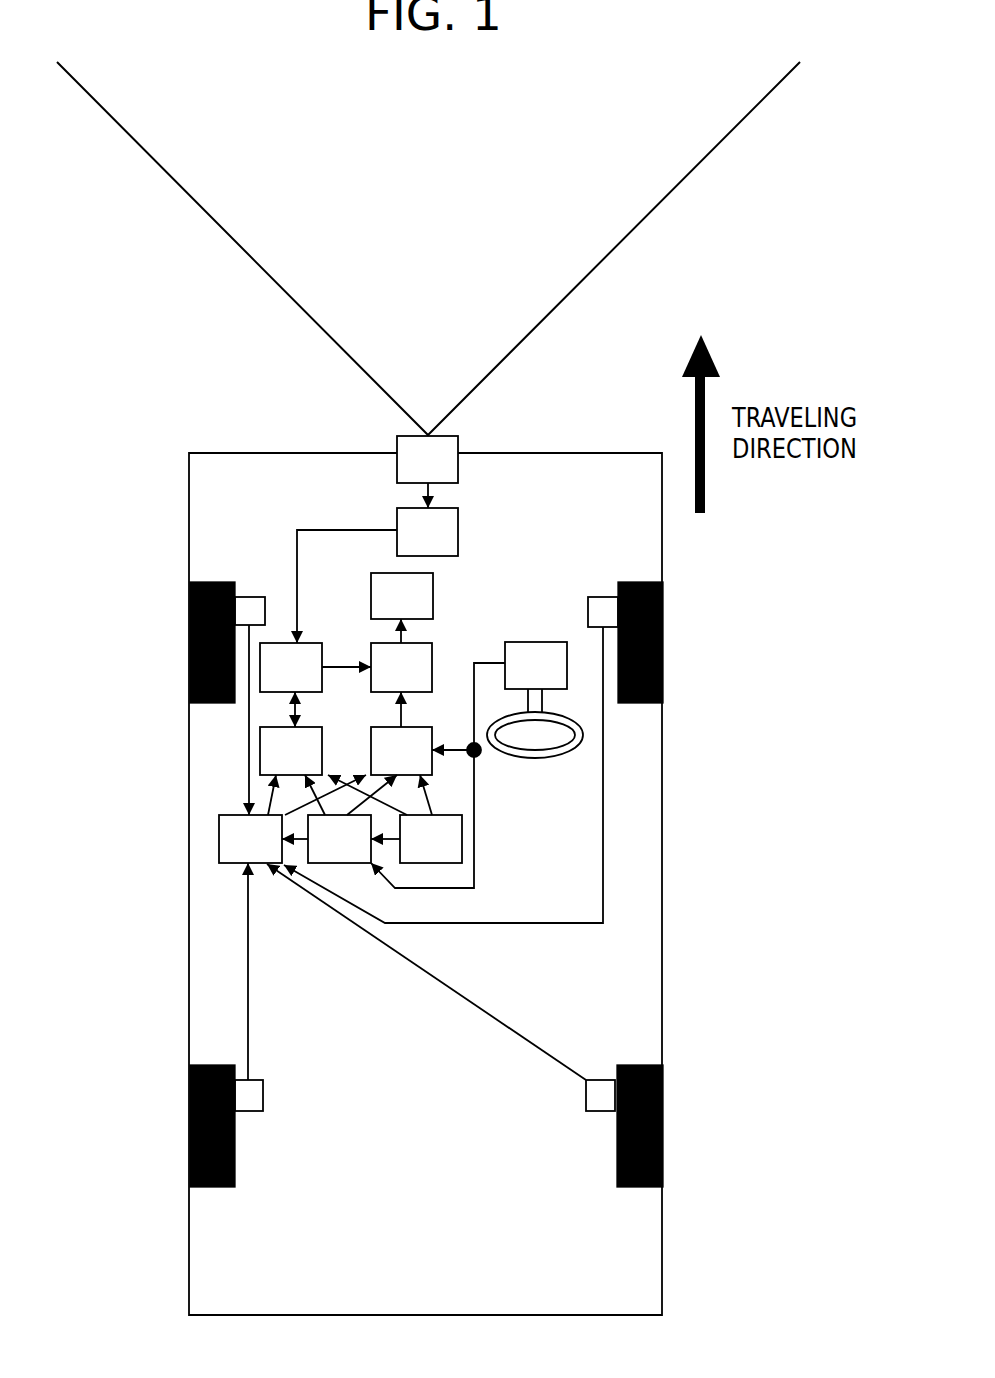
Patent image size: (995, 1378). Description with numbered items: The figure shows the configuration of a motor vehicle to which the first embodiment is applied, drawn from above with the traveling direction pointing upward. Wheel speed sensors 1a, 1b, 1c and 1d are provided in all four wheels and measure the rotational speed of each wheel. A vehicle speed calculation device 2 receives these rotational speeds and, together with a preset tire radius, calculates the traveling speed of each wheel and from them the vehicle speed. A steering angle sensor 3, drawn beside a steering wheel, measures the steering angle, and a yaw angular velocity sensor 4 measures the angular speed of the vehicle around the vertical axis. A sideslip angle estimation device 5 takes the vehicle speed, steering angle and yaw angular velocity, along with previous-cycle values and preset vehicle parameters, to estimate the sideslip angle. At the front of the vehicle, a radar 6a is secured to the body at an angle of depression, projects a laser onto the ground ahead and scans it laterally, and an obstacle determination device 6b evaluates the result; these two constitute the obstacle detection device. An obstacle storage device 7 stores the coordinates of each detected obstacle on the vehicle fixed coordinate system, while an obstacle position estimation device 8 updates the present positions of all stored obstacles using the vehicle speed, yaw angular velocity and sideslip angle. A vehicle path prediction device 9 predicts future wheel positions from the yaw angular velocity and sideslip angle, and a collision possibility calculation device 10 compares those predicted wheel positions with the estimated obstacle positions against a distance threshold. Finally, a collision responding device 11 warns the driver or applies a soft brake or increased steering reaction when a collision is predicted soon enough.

The wheel speed sensor 1a is at (249, 597).
The wheel speed sensor 1b is at (603, 597).
The wheel speed sensor 1c is at (263, 1095).
The wheel speed sensor 1d is at (586, 1095).
The vehicle speed calculation device 2 is at (250, 839).
The steering angle sensor 3 is at (536, 665).
The yaw angular velocity sensor 4 is at (431, 839).
The sideslip angle estimation device 5 is at (339, 839).
The radar 6a is at (427, 459).
The obstacle determination device 6b is at (427, 532).
The obstacle storage device 7 is at (291, 667).
The obstacle position estimation device 8 is at (291, 751).
The vehicle path prediction device 9 is at (401, 751).
The collision possibility calculation device 10 is at (401, 667).
The collision responding device 11 is at (402, 596).